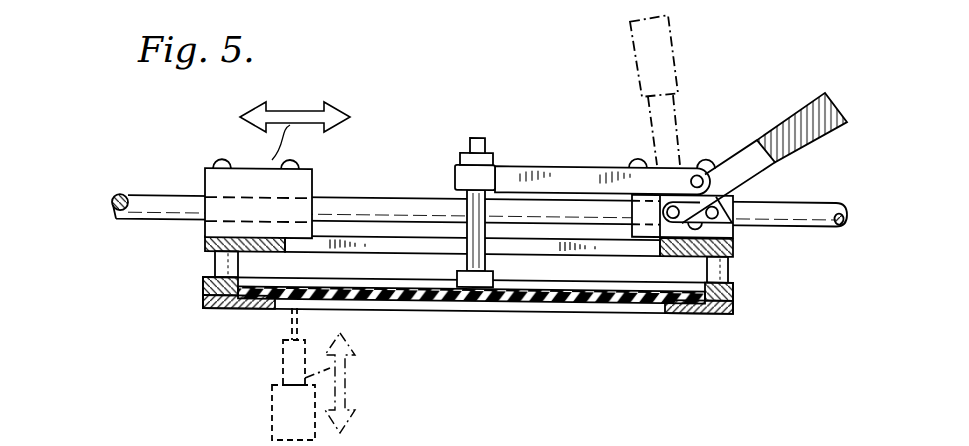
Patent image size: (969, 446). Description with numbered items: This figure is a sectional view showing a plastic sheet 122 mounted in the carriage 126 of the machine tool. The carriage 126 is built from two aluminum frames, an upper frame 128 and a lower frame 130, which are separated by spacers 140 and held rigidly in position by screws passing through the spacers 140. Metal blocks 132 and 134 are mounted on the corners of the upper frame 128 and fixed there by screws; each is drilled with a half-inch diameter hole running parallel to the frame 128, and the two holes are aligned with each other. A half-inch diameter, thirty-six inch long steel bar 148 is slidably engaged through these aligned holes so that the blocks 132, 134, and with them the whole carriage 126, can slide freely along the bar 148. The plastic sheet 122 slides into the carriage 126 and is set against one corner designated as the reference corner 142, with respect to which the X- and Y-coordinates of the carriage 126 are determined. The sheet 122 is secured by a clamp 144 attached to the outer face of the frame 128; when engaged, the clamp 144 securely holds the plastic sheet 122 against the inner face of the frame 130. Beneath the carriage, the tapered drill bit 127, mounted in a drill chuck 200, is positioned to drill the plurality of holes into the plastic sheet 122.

The steel bar 148 is at (471, 182).
The metal block 132 is at (248, 178).
The metal block 134 is at (605, 154).
The clamp 144 is at (738, 120).
The carriage 126 is at (391, 249).
The spacers 140 is at (471, 279).
The reference corner 142 is at (227, 328).
The tapered drill bit 127 is at (265, 343).
The drill chuck 200 is at (272, 386).
The plastic sheet 122 is at (468, 323).
The upper frame 128 is at (723, 235).
The lower frame 130 is at (727, 336).